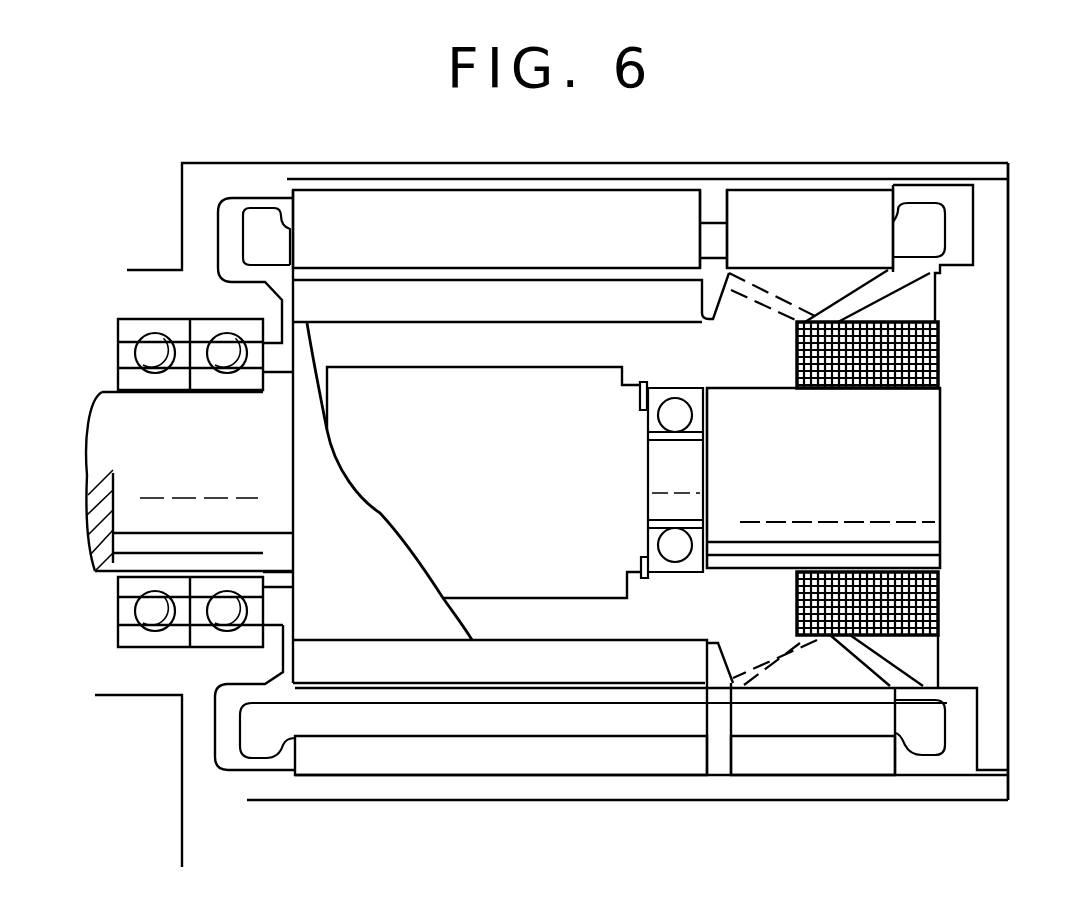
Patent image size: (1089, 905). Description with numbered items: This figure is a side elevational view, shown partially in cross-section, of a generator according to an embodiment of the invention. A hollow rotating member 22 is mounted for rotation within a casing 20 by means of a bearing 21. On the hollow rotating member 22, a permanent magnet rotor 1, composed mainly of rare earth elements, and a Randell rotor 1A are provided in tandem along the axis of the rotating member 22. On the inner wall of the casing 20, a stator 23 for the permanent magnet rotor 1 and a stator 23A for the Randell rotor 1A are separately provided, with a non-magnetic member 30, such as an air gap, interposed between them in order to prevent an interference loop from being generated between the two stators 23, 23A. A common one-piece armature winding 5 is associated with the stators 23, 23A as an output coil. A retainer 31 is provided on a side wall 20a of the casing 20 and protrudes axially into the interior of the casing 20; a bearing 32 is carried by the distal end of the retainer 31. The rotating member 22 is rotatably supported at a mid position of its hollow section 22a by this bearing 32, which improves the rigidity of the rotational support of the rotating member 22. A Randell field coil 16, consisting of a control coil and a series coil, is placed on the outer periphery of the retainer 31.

The permanent magnet rotor 1 is at (572, 290).
The Randell rotor 1A is at (850, 278).
The armature winding 5 is at (263, 216).
The Randell field coil 16 is at (938, 342).
The casing 20 is at (708, 175).
The side wall 20a is at (983, 533).
The bearing 21 is at (140, 353).
The hollow rotating member 22 is at (100, 418).
The hollow section 22a is at (517, 368).
The stator 23 is at (408, 210).
The stator 23A is at (862, 200).
The non-magnetic member 30 is at (722, 205).
The retainer 31 is at (928, 470).
The bearing 32 is at (658, 416).